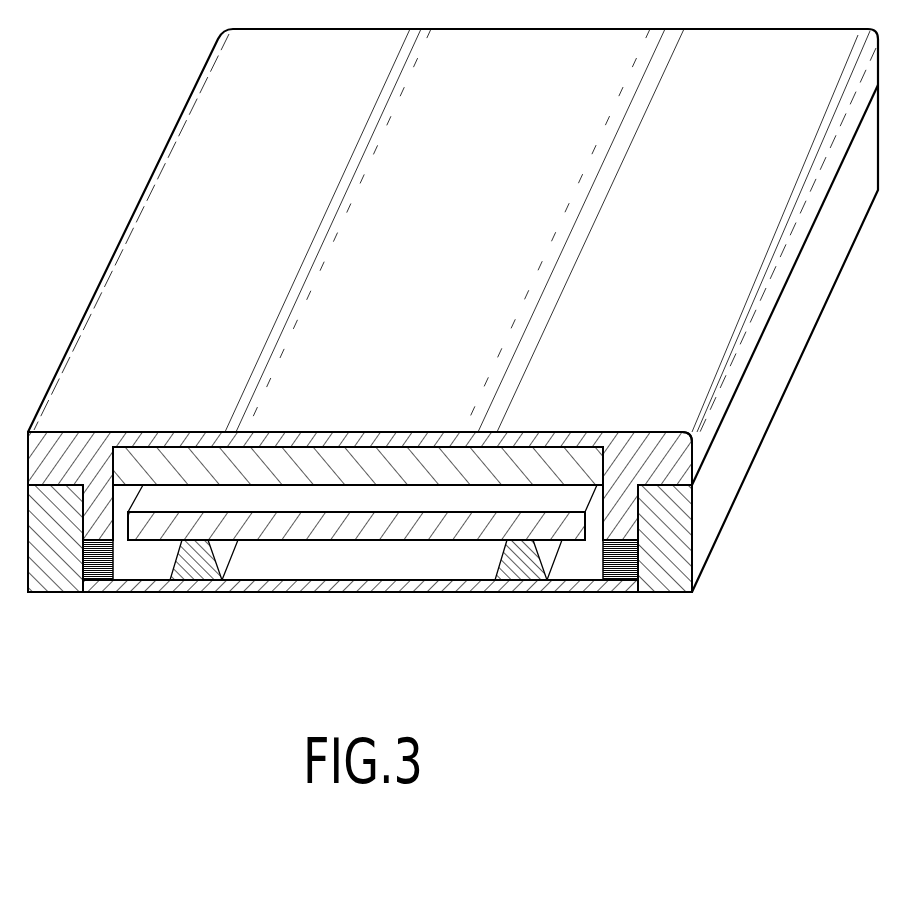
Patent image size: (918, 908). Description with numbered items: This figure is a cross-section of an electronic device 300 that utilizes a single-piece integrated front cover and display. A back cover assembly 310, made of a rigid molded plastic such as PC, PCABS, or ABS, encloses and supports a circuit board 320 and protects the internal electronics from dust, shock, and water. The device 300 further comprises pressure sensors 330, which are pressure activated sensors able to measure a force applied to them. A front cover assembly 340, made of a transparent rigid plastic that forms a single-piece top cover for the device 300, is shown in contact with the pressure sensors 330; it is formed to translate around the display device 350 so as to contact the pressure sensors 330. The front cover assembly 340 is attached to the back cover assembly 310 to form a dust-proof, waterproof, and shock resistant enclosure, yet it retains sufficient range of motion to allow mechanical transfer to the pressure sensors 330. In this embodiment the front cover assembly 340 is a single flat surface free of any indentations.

The electronic device 300 is at (77, 134).
The back cover assembly 310 is at (40, 594).
The circuit board 320 is at (357, 520).
The pressure sensors 330 is at (98, 594).
The front cover assembly 340 is at (447, 442).
The display device 350 is at (533, 458).